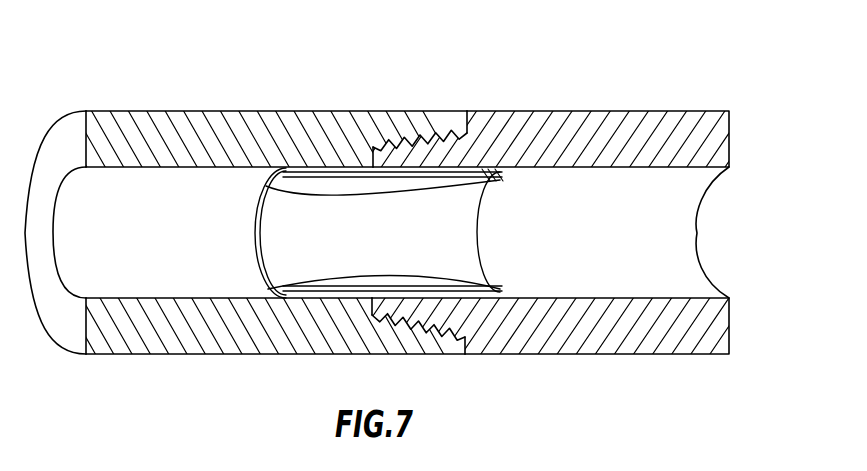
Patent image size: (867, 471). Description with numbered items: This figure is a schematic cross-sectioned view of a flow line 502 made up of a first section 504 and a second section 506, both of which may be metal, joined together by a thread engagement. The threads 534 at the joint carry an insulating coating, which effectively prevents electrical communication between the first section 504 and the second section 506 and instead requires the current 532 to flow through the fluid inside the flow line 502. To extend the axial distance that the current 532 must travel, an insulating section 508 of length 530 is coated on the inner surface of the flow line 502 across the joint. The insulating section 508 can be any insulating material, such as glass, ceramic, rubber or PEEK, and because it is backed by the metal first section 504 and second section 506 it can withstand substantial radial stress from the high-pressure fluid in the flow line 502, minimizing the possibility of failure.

The flow line 502 is at (640, 251).
The first section 504 is at (713, 135).
The second section 506 is at (162, 110).
The insulating section 508 is at (462, 137).
The length 530 is at (502, 296).
The current 532 is at (265, 196).
The threads 534 is at (437, 128).